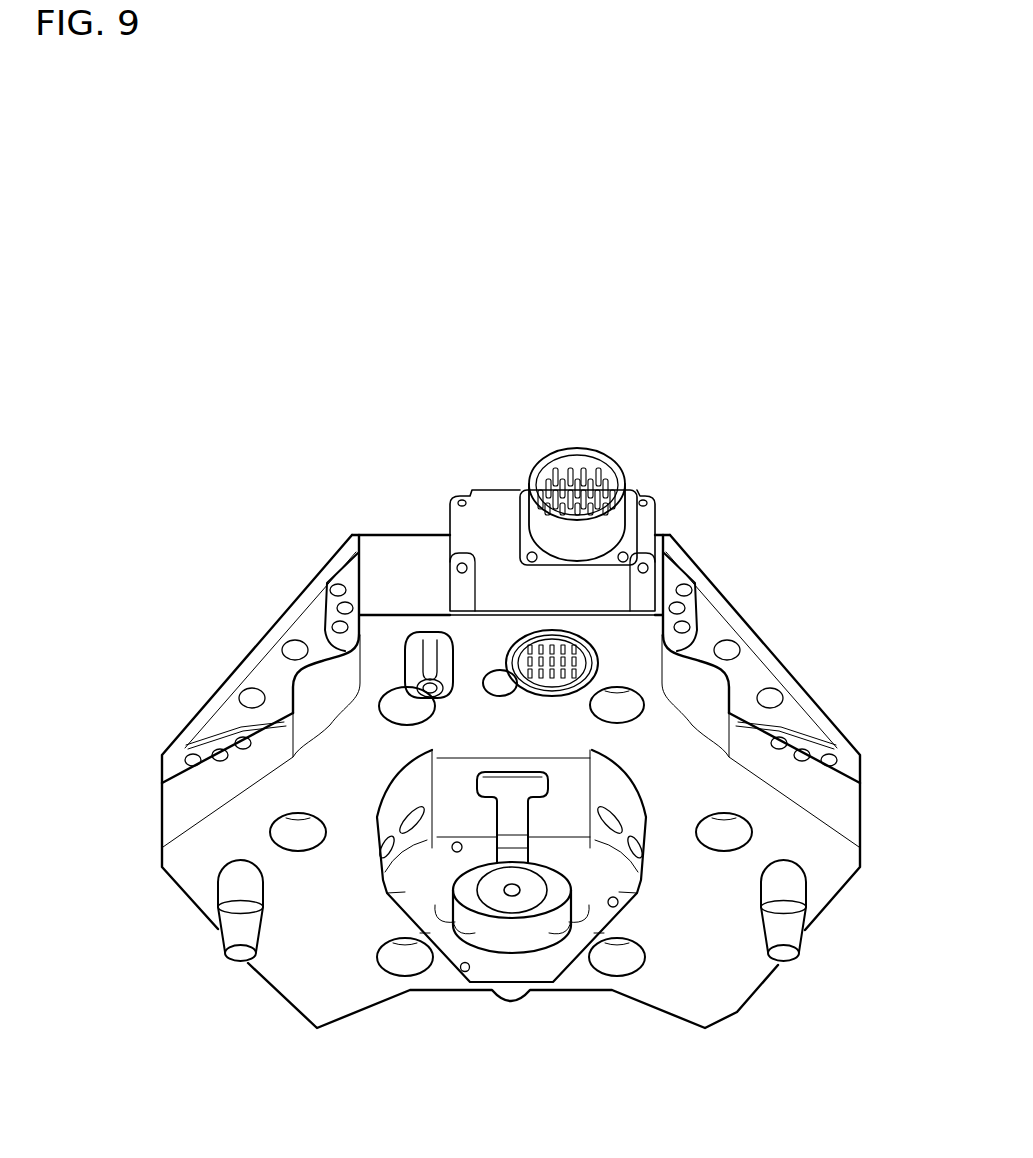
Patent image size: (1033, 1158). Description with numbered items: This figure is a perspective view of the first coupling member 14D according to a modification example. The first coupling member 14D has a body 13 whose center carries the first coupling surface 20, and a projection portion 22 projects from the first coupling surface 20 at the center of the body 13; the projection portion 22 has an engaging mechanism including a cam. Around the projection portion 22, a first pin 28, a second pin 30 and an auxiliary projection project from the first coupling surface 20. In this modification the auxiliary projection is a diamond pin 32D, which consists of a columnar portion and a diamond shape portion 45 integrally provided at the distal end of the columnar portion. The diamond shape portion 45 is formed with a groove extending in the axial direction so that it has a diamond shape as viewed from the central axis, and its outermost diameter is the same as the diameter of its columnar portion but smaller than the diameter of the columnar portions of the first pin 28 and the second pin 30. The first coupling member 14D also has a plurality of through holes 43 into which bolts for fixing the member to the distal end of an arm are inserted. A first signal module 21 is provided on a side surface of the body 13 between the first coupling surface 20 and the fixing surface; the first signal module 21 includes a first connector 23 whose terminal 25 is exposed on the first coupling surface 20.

The first coupling member 14D is at (804, 495).
The body 13 is at (845, 820).
The first coupling surface 20 is at (697, 877).
The first signal module 21 is at (503, 507).
The projection portion 22 is at (605, 883).
The first connector 23 is at (562, 643).
The terminal 25 is at (625, 712).
The first pin 28 is at (232, 882).
The second pin 30 is at (790, 883).
The diamond pin 32D is at (417, 653).
The through holes 43 is at (393, 702).
The diamond shape portion 45 is at (430, 640).